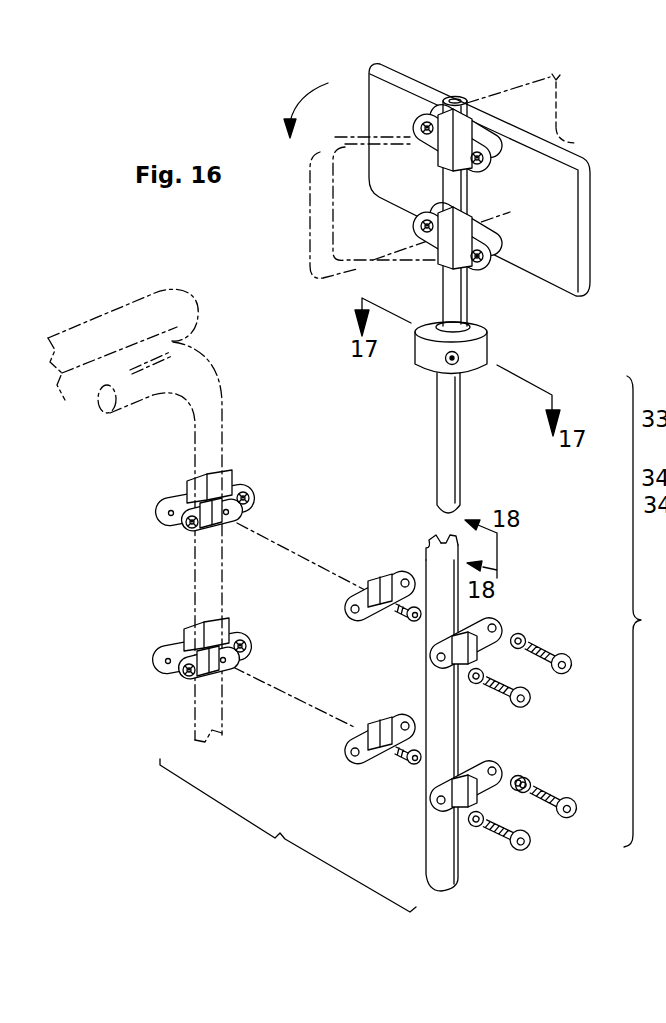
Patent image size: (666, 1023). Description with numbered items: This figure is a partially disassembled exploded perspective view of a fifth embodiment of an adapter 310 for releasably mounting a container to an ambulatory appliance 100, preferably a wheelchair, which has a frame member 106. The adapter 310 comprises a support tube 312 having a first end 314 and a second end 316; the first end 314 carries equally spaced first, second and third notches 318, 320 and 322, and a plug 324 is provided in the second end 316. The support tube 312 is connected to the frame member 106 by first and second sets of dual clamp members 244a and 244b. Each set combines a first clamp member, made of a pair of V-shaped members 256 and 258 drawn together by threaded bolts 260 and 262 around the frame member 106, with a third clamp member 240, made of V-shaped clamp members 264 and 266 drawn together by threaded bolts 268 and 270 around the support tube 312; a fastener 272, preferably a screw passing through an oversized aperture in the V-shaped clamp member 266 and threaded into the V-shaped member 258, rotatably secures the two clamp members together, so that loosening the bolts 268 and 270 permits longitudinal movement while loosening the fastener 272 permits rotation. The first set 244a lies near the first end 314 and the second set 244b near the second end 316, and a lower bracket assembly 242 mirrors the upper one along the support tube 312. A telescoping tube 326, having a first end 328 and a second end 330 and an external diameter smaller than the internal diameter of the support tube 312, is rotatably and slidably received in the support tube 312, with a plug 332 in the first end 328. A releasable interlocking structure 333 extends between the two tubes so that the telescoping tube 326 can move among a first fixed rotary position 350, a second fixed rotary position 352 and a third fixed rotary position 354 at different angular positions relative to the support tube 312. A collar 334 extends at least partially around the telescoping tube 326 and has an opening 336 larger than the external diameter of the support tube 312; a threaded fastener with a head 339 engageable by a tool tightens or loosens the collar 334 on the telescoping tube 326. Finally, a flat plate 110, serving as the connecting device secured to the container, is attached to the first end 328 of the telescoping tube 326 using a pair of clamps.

The ambulatory appliance 100 is at (87, 298).
The frame member 106 is at (216, 430).
The flat plate 110 is at (560, 273).
The third clamp member 240 is at (469, 641).
The lower bracket assembly 242 is at (473, 795).
The first set of dual clamp members 244a is at (196, 523).
The second set of dual clamp members 244b is at (248, 651).
The V-shaped member 256 is at (165, 518).
The V-shaped member 258 is at (180, 534).
The threaded bolt 260 is at (255, 503).
The threaded bolt 262 is at (198, 520).
The V-shaped clamp member 264 is at (498, 618).
The V-shaped clamp member 266 is at (356, 614).
The threaded bolt 268 is at (531, 698).
The threaded bolt 270 is at (582, 652).
The fastener 272 is at (400, 614).
The adapter 310 is at (274, 870).
The support tube 312 is at (459, 722).
The first end 314 is at (433, 551).
The second end 316 is at (455, 887).
The first notch 318 is at (437, 558).
The second notch 320 is at (442, 540).
The third notch 322 is at (500, 558).
The plug 324 is at (440, 892).
The telescoping tube 326 is at (474, 168).
The first end 328 is at (463, 97).
The second end 330 is at (462, 507).
The plug 332 is at (452, 98).
The releasable interlocking structure 333 is at (385, 459).
The collar 334 is at (477, 354).
The opening 336 is at (437, 327).
The head 339 is at (456, 364).
The first fixed rotary position 350 is at (587, 163).
The second fixed rotary position 352 is at (559, 74).
The third fixed rotary position 354 is at (570, 142).